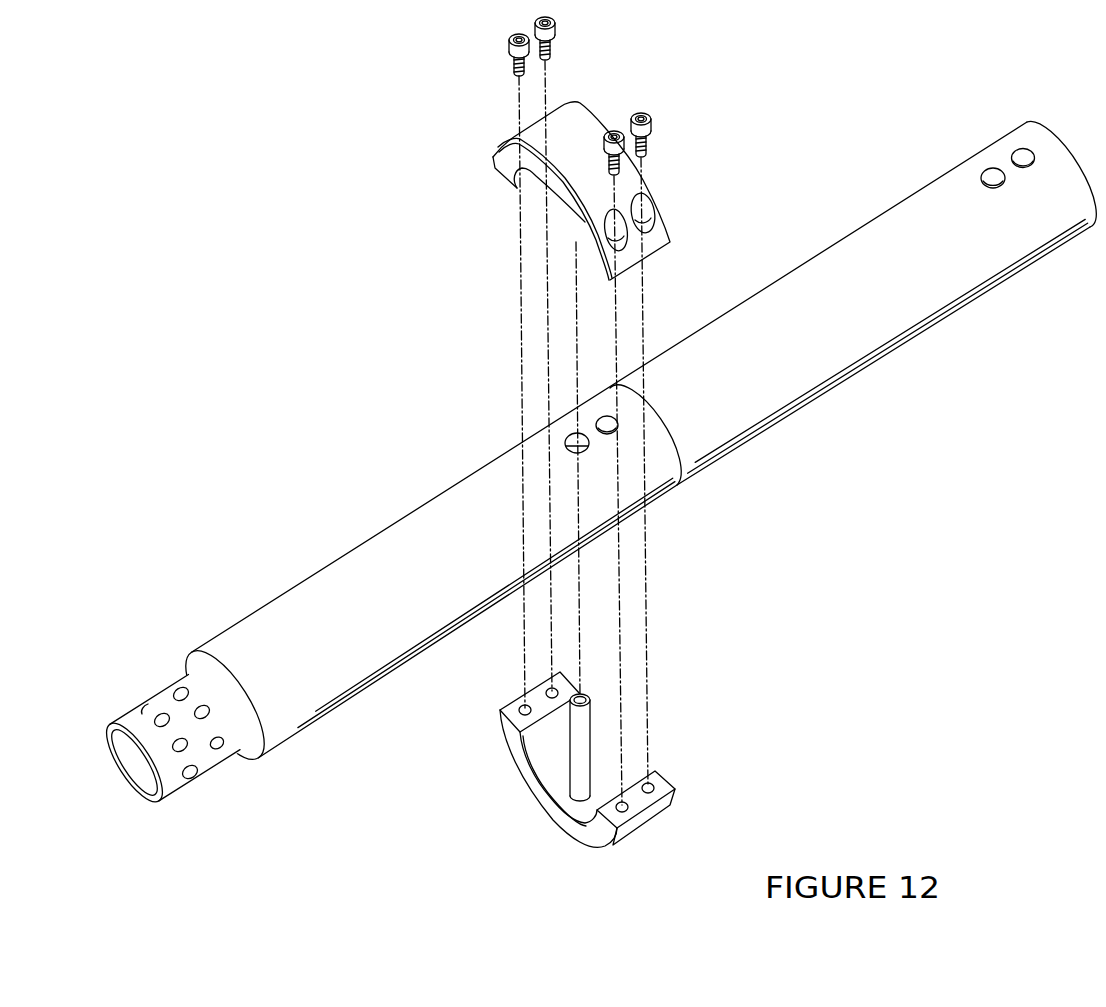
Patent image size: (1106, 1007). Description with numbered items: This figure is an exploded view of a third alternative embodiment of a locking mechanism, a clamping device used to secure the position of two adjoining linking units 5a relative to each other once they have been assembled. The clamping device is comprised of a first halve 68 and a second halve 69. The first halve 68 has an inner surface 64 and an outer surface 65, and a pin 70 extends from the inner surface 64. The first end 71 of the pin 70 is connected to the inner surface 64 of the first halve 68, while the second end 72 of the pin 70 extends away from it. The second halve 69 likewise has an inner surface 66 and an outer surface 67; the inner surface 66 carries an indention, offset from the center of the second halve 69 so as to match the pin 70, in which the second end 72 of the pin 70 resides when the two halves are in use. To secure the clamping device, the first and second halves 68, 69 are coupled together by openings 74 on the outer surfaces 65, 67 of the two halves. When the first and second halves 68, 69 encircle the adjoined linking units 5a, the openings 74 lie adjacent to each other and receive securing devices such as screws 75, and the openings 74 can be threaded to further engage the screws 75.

The linking unit 5a is at (342, 560).
The inner surface of the first halve 64 is at (532, 747).
The outer surface of the first halve 65 is at (637, 823).
The inner surface of the second halve 66 is at (517, 190).
The outer surface of the second halve 67 is at (592, 120).
The first halve 68 is at (670, 802).
The second halve 69 is at (493, 158).
The pin 70 is at (585, 728).
The first end of the pin 71 is at (570, 795).
The second end of the pin 72 is at (587, 690).
The openings 74 is at (650, 211).
The screws 75 is at (556, 28).